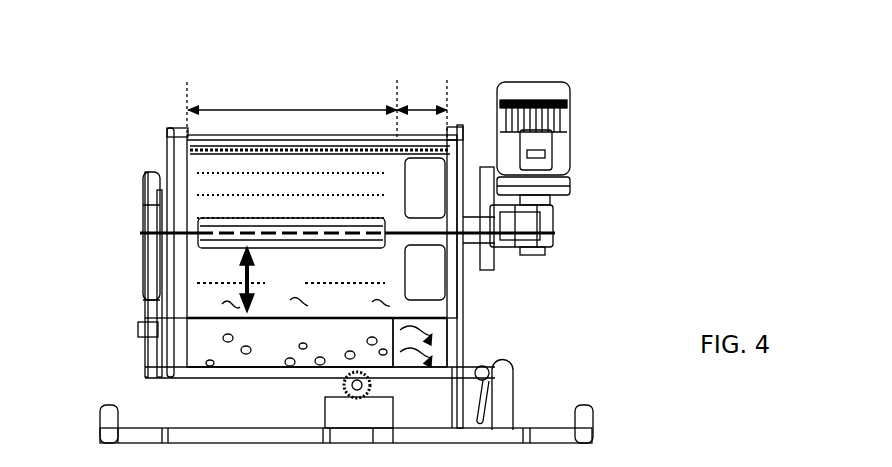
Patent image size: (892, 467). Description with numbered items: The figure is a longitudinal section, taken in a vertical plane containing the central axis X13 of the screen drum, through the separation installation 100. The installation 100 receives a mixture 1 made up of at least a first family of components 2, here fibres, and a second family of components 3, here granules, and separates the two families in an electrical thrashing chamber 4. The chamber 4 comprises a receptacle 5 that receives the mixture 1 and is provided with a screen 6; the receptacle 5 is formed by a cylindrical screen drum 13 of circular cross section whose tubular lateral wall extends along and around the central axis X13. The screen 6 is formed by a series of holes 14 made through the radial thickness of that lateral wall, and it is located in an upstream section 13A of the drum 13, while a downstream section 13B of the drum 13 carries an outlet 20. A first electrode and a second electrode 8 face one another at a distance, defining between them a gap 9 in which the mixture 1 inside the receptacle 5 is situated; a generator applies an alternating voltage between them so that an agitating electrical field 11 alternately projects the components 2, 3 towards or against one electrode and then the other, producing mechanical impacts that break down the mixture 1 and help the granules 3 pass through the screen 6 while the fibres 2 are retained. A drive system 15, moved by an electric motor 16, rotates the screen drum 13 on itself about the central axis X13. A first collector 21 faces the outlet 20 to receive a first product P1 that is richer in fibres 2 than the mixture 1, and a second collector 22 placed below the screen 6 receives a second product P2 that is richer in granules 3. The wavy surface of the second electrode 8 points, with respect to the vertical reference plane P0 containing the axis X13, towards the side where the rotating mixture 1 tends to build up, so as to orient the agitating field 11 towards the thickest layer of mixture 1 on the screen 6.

The mixture 1 is at (207, 300).
The components of the first family 2 is at (420, 358).
The components of the second family 3 is at (317, 355).
The electrical thrashing chamber 4 is at (172, 102).
The receptacle 5 is at (203, 158).
The screen 6 is at (203, 323).
The second electrode 8 is at (205, 225).
The gap 9 is at (296, 304).
The agitating electrical field 11 is at (237, 273).
The screen drum 13 is at (291, 184).
The upstream section 13A is at (292, 106).
The downstream section 13B is at (423, 110).
The holes 14 is at (210, 285).
The drive system 15 is at (568, 218).
The motor 16 is at (538, 150).
The outlet 20 is at (442, 311).
The first collector 21 is at (447, 370).
The second collector 22 is at (222, 368).
The separation installation 100 is at (617, 190).
The vertical reference plane P0 is at (38, 237).
The first product P1 is at (424, 342).
The second product P2 is at (278, 357).
The central axis X13 is at (252, 222).